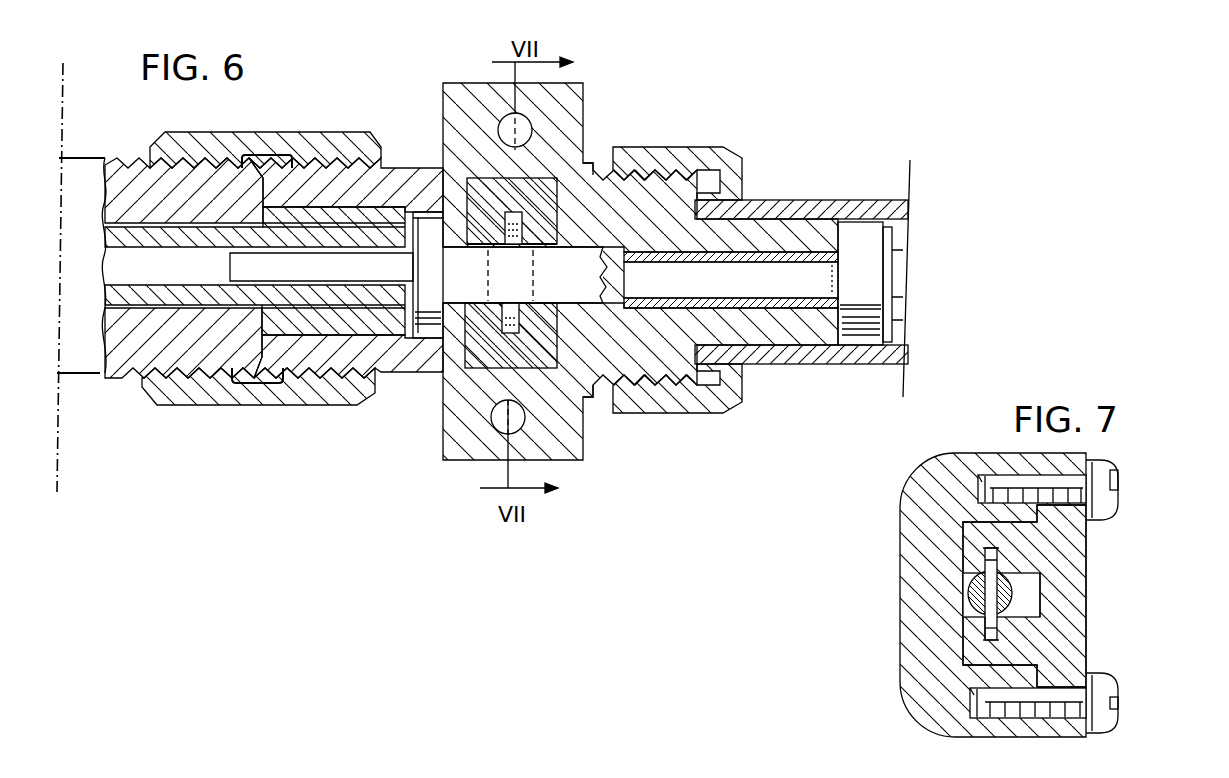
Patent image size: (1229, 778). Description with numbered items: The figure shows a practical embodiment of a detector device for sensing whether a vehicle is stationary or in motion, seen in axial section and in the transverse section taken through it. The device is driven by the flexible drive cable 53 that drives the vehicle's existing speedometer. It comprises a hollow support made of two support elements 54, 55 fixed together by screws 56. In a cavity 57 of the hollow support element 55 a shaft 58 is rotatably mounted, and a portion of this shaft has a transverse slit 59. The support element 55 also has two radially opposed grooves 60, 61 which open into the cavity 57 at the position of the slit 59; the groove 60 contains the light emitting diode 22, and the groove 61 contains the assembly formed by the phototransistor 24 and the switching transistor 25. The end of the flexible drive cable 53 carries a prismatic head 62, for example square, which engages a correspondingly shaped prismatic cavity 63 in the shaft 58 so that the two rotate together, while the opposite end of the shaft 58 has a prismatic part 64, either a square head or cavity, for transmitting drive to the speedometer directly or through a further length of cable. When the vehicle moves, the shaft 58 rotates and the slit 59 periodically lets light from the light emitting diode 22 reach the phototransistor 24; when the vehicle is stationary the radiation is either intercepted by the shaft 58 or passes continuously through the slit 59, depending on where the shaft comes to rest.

In FIG. 6, the light emitting diode 22 is at (508, 218).
In FIG. 7, the light emitting diode 22 is at (997, 553).
In FIG. 6, the phototransistor 24 is at (552, 392).
In FIG. 7, the phototransistor 24 is at (990, 637).
In FIG. 6, the switching transistor 25 is at (588, 169).
In FIG. 6, the flexible drive cable 53 is at (900, 267).
In FIG. 6, the support element 54 is at (553, 118).
In FIG. 7, the support element 54 is at (923, 530).
In FIG. 6, the support element 55 is at (492, 352).
In FIG. 7, the support element 55 is at (1077, 663).
In FIG. 7, the screws 56 is at (1118, 480).
In FIG. 6, the cavity 57 is at (477, 296).
In FIG. 7, the cavity 57 is at (1027, 590).
In FIG. 6, the shaft 58 is at (655, 283).
In FIG. 7, the shaft 58 is at (1013, 597).
In FIG. 6, the transverse slit 59 is at (594, 168).
In FIG. 7, the transverse slit 59 is at (990, 592).
In FIG. 6, the groove 60 is at (512, 240).
In FIG. 7, the groove 60 is at (997, 565).
In FIG. 6, the groove 61 is at (500, 333).
In FIG. 7, the groove 61 is at (987, 622).
In FIG. 6, the prismatic head 62 is at (816, 280).
In FIG. 6, the prismatic cavity 63 is at (643, 278).
In FIG. 6, the prismatic part 64 is at (250, 268).